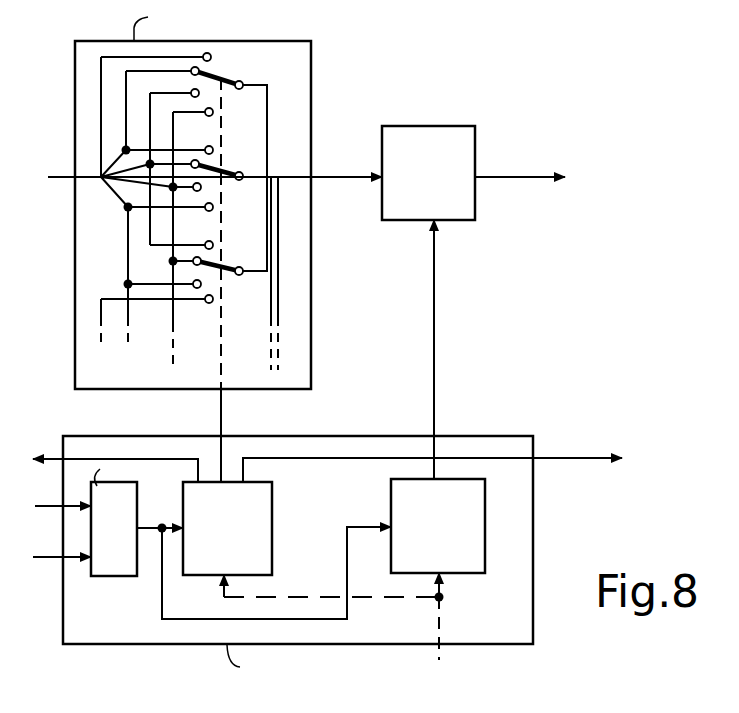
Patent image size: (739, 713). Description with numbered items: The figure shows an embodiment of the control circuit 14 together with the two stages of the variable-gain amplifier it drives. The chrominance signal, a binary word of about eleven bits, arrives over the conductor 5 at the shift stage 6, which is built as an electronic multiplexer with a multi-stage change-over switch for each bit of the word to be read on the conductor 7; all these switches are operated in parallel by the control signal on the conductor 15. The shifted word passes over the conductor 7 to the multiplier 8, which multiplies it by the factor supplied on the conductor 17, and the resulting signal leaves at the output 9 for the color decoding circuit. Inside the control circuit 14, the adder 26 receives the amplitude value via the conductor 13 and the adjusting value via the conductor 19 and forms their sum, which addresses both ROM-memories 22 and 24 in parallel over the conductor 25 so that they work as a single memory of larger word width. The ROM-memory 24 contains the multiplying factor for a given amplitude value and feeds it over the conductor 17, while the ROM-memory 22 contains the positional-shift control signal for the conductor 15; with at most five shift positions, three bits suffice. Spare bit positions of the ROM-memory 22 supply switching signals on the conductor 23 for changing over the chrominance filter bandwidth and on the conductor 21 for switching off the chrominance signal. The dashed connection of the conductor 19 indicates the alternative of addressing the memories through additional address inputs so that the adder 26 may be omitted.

The conductor 5 is at (56, 180).
The shift stage 6 is at (316, 55).
The conductor 7 is at (354, 178).
The multiplier 8 is at (443, 104).
The output 9 is at (519, 178).
The conductor 13 is at (48, 506).
The control circuit 14 is at (533, 443).
The conductor 15 is at (224, 418).
The conductor 17 is at (435, 394).
The conductor 19 is at (48, 557).
The conductor 21 is at (559, 461).
The ROM-memory 22 is at (272, 520).
The conductor 23 is at (58, 456).
The ROM-memory 24 is at (391, 494).
The conductor 25 is at (162, 597).
The adder 26 is at (110, 567).